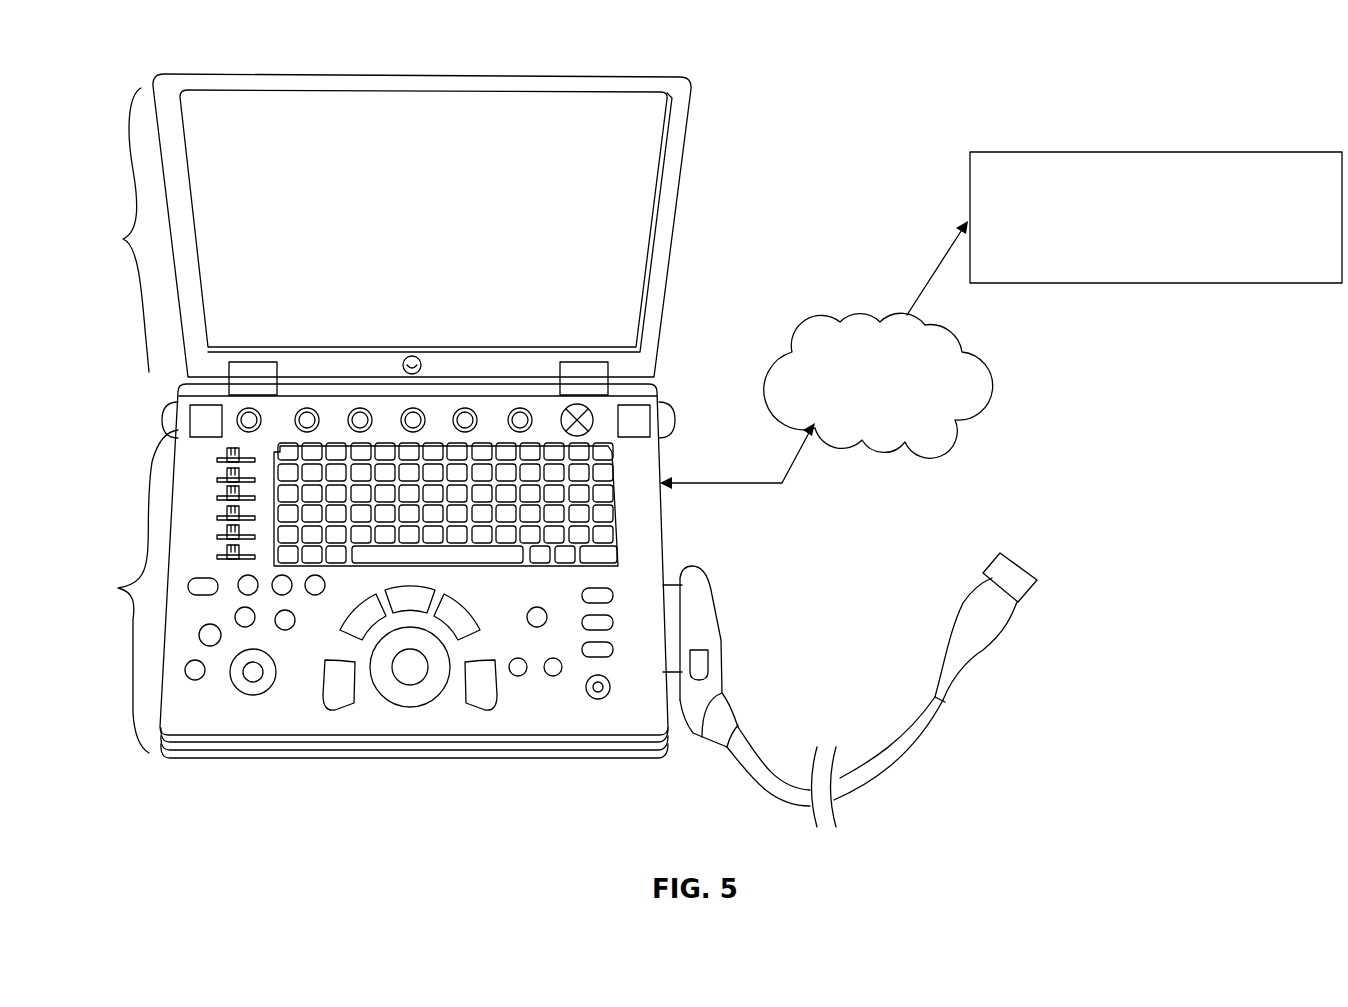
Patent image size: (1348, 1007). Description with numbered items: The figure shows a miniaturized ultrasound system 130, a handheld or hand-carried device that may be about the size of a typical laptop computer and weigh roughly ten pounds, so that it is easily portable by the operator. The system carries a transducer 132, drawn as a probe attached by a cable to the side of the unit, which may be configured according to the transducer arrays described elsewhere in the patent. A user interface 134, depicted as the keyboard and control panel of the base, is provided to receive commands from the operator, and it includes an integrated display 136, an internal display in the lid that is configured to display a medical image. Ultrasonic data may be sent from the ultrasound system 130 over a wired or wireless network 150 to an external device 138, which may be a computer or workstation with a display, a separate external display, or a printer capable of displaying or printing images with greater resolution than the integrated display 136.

The miniaturized ultrasound system 130 is at (140, 36).
The transducer 132 is at (851, 810).
The user interface 134 is at (118, 588).
The integrated display 136 is at (123, 239).
The external device 138 is at (1038, 152).
The network 150 is at (843, 316).